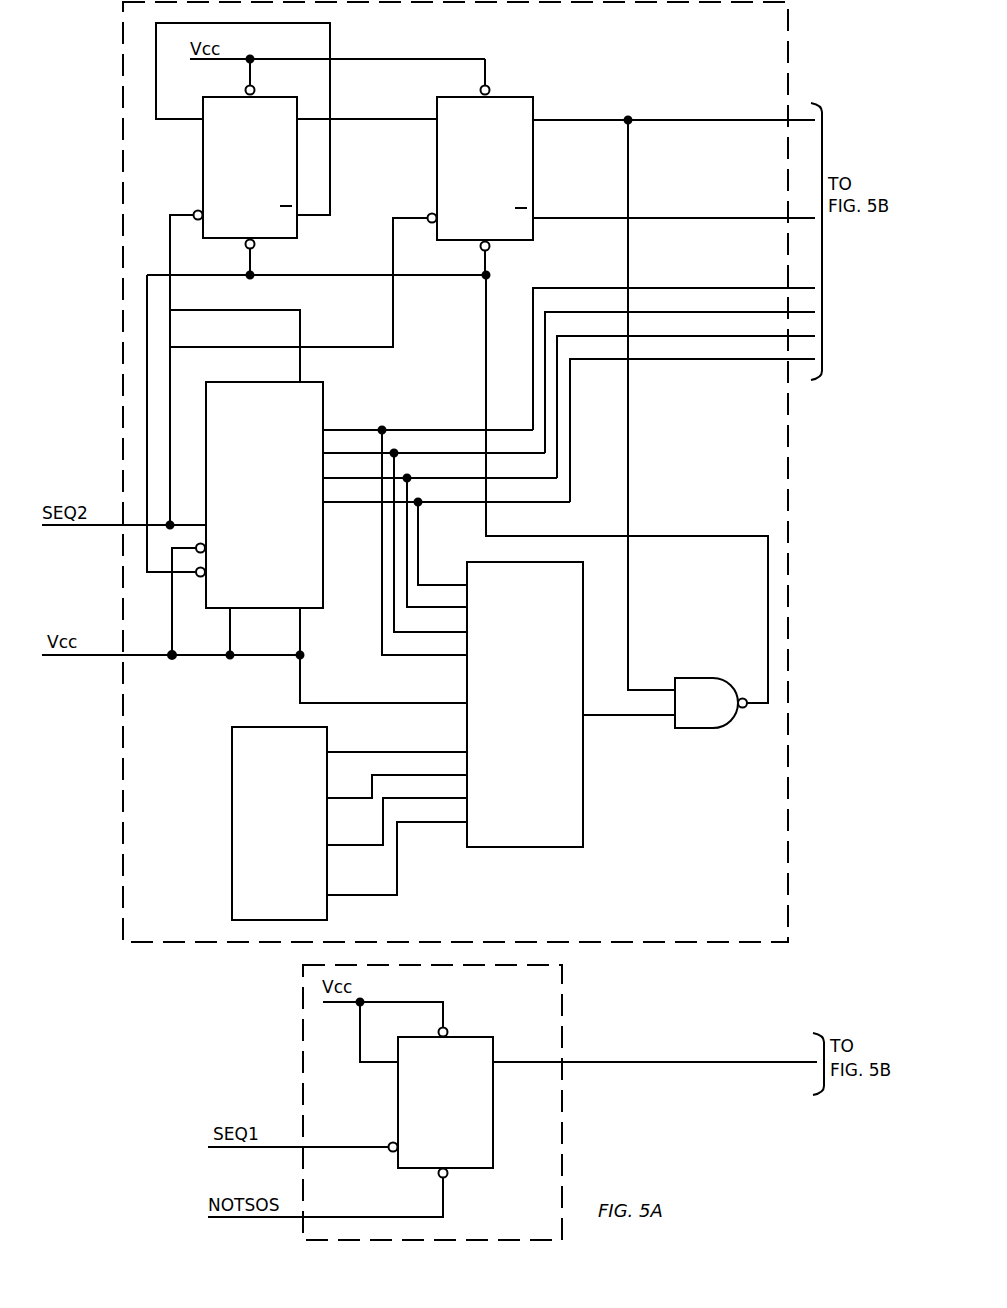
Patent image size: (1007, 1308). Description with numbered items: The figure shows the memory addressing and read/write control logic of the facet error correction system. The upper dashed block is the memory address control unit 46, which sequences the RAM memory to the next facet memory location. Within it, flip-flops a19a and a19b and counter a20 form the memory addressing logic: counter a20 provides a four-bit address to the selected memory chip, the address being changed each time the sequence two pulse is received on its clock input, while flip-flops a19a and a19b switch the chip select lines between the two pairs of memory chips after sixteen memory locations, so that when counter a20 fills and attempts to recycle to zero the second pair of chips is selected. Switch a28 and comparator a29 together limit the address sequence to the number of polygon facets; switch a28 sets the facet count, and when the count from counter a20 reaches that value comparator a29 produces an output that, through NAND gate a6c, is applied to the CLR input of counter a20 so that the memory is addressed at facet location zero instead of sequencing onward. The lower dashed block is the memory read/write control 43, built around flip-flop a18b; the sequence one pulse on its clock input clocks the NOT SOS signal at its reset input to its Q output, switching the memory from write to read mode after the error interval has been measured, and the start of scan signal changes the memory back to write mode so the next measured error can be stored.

The memory address control unit 46 is at (236, 942).
The memory read/write control 43 is at (562, 1015).
The flip-flop a19a is at (246, 167).
The flip-flop a19b is at (481, 168).
The counter a20 is at (259, 495).
The switch a28 is at (279, 823).
The comparator a29 is at (525, 704).
The NAND gate a6c is at (711, 703).
The flip-flop a18b is at (441, 1103).